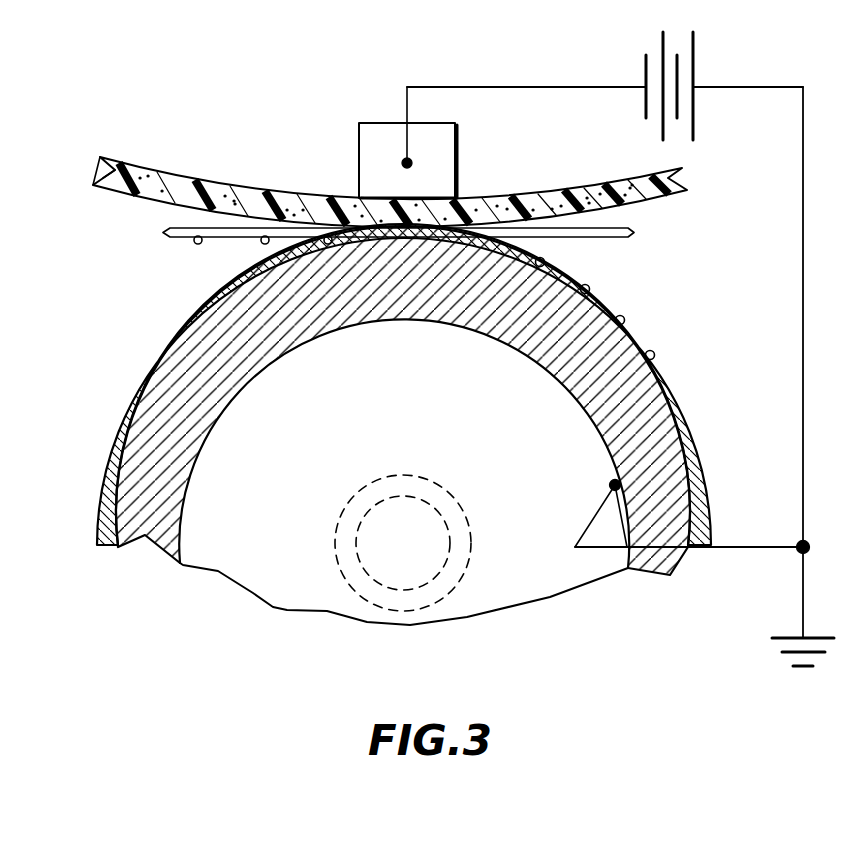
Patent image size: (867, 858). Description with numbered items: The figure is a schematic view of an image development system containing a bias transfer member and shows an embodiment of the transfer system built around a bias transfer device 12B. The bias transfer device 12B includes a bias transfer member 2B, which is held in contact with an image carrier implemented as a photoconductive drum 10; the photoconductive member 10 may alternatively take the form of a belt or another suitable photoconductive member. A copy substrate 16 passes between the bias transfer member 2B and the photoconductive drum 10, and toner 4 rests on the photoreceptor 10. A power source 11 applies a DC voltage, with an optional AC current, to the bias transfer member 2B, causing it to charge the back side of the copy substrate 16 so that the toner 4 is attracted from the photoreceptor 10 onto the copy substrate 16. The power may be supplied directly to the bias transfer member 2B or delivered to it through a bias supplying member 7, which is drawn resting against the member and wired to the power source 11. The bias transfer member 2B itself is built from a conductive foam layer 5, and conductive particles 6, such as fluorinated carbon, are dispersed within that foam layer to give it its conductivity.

The bias transfer member 2B is at (72, 138).
The bias transfer device 12B is at (250, 125).
The conductive foam layer 5 is at (146, 168).
The conductive particles 6 is at (115, 178).
The bias supplying member 7 is at (368, 158).
The copy substrate 16 is at (630, 233).
The toner 4 is at (264, 243).
The photoconductive drum 10 is at (700, 357).
The power source 11 is at (803, 620).